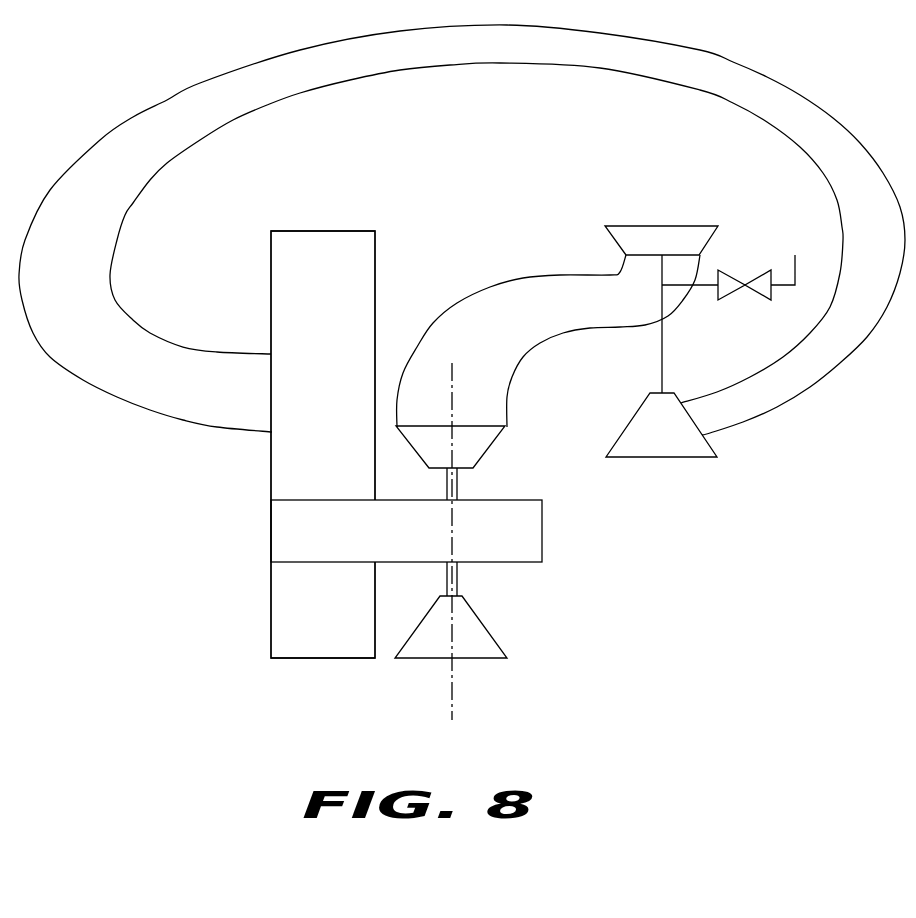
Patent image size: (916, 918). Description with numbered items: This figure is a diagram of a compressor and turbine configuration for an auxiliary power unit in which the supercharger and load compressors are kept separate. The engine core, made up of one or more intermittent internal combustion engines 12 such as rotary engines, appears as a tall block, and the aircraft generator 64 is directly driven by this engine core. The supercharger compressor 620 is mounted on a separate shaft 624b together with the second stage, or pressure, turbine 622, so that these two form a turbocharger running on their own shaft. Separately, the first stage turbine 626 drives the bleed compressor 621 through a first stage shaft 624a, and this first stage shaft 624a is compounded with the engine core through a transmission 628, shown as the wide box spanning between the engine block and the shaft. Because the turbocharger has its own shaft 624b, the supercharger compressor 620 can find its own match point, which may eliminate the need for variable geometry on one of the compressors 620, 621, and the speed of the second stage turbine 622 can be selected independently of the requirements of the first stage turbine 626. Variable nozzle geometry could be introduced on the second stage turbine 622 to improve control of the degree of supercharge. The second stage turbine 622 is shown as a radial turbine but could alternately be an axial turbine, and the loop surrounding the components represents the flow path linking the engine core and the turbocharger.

The intermittent internal combustion engine 12 is at (323, 444).
The aircraft generator 64 is at (325, 647).
The transmission 628 is at (406, 531).
The first stage turbine 626 is at (468, 446).
The first stage shaft 624a is at (457, 578).
The bleed compressor 621 is at (480, 647).
The second stage turbine 622 is at (637, 238).
The separate shaft 624b is at (659, 355).
The supercharger compressor 620 is at (661, 445).